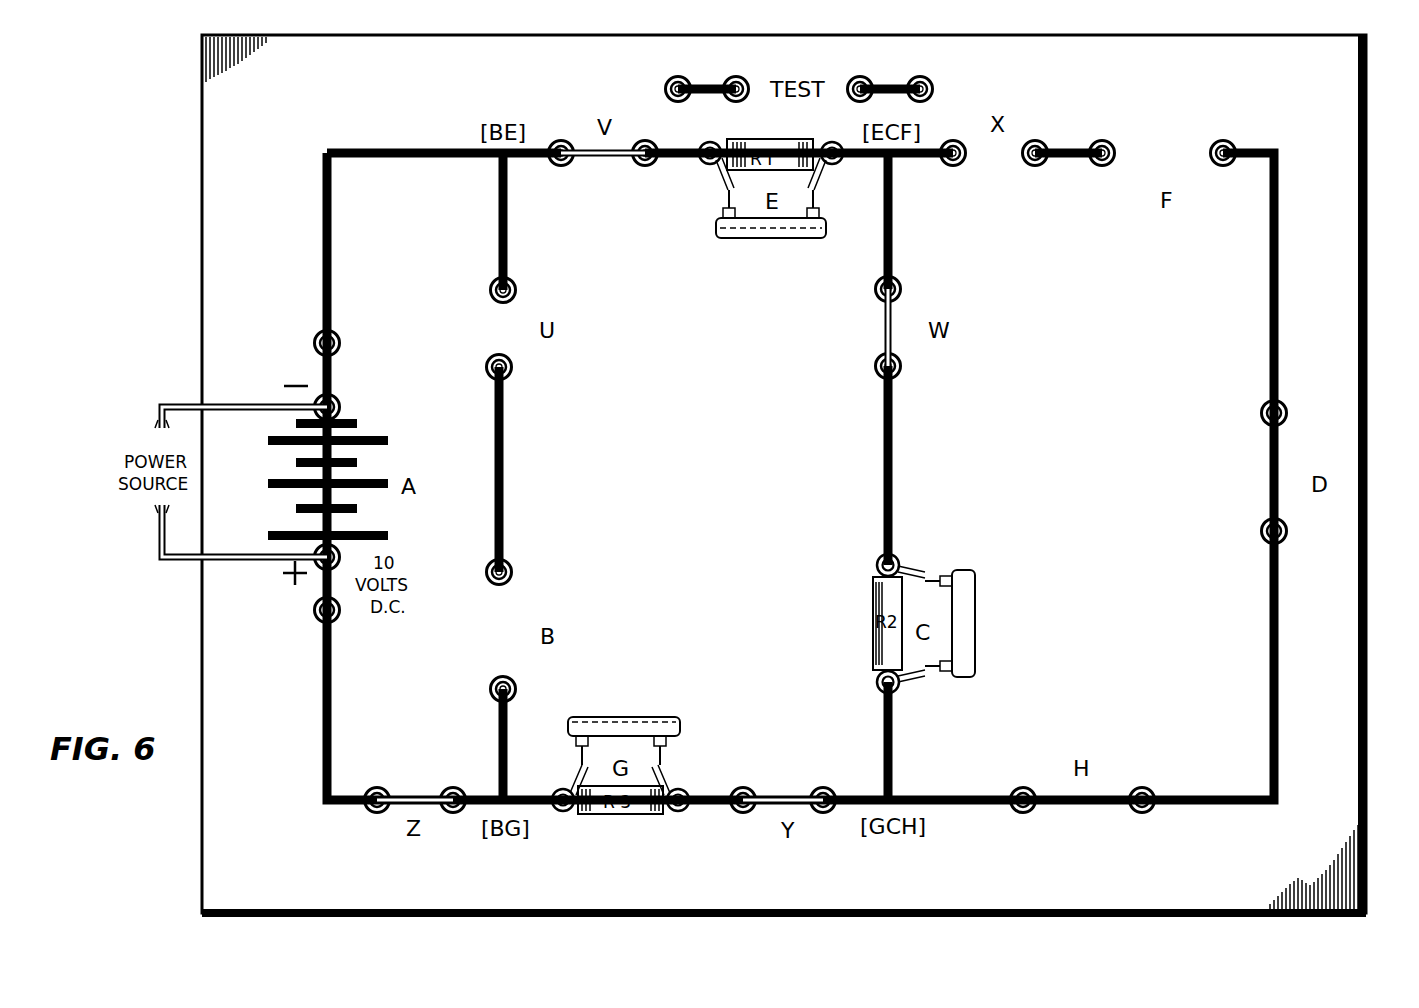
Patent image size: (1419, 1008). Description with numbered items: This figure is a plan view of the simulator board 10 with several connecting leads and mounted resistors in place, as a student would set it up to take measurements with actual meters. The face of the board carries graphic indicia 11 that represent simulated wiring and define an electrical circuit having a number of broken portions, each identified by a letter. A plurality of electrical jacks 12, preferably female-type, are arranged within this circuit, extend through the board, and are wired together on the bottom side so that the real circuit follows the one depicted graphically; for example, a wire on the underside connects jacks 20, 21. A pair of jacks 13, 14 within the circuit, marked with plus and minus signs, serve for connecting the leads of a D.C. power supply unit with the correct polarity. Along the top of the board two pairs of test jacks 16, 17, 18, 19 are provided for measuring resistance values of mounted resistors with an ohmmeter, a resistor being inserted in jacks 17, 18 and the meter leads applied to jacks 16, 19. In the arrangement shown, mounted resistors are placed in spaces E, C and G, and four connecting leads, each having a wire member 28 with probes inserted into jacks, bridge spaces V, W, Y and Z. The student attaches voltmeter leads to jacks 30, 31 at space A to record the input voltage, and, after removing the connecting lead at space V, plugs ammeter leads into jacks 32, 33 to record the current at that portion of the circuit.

The simulator board 10 is at (1360, 167).
The graphic indicia 11 is at (338, 150).
The electrical jacks 12 is at (1268, 425).
The power supply jack 13 is at (340, 407).
The power supply jack 14 is at (340, 556).
The test jack 16 is at (684, 76).
The test jack 17 is at (742, 77).
The test jack 18 is at (865, 76).
The test jack 19 is at (925, 77).
The jack 20 is at (512, 369).
The jack 21 is at (512, 566).
The wire member 28 is at (590, 159).
The jack 30 is at (340, 341).
The jack 31 is at (316, 618).
The jack 32 is at (648, 166).
The jack 33 is at (704, 165).